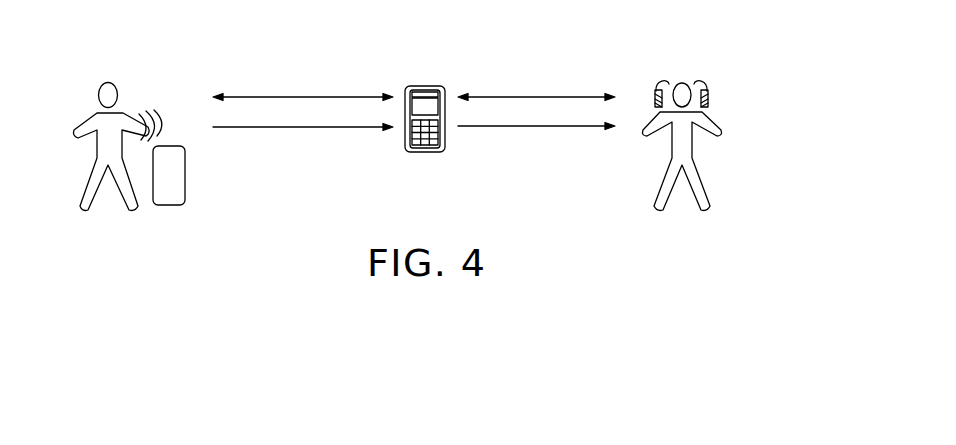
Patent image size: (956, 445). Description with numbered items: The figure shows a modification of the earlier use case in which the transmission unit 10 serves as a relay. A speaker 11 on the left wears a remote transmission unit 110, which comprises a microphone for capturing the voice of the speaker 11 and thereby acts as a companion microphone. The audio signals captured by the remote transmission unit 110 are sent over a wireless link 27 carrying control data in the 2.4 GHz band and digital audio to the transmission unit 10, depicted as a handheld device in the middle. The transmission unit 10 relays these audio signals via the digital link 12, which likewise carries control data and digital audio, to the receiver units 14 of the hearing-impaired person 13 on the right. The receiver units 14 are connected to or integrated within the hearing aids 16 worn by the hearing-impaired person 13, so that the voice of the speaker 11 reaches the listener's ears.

The transmission unit 10 is at (418, 86).
The speaker 11 is at (110, 80).
The digital link 12 is at (530, 150).
The hearing-impaired person 13 is at (682, 82).
The receiver units 14 is at (650, 113).
The hearing aids 16 is at (662, 82).
The wireless link from microphone unit 27 is at (302, 150).
The remote transmission unit 110 is at (178, 183).